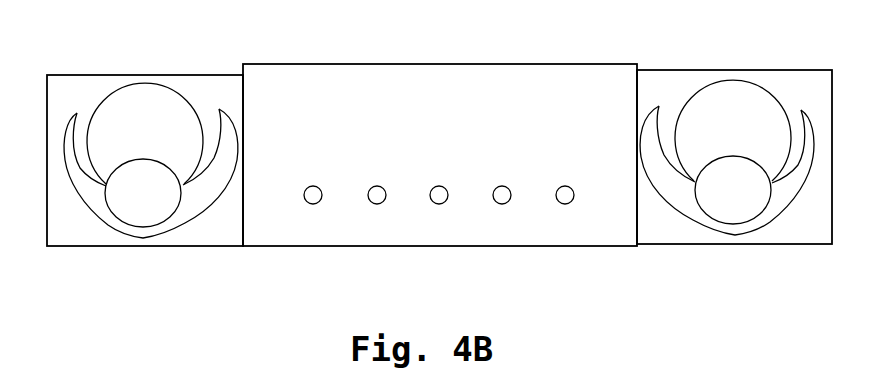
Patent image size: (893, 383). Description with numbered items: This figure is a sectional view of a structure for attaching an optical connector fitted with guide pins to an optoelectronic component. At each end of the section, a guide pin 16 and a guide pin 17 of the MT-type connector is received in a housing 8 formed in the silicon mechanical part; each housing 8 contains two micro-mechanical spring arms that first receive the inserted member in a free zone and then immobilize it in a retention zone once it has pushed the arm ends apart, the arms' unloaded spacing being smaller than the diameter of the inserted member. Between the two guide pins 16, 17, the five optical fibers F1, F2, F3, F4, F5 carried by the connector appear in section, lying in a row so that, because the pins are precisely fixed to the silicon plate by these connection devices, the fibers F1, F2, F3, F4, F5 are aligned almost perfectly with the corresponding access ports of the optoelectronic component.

The housing 8 is at (140, 112).
The guide pin 16 is at (128, 200).
The guide pin 17 is at (723, 195).
The optical fiber F1 is at (313, 204).
The optical fiber F2 is at (377, 204).
The optical fiber F3 is at (440, 204).
The optical fiber F4 is at (502, 204).
The optical fiber F5 is at (565, 204).